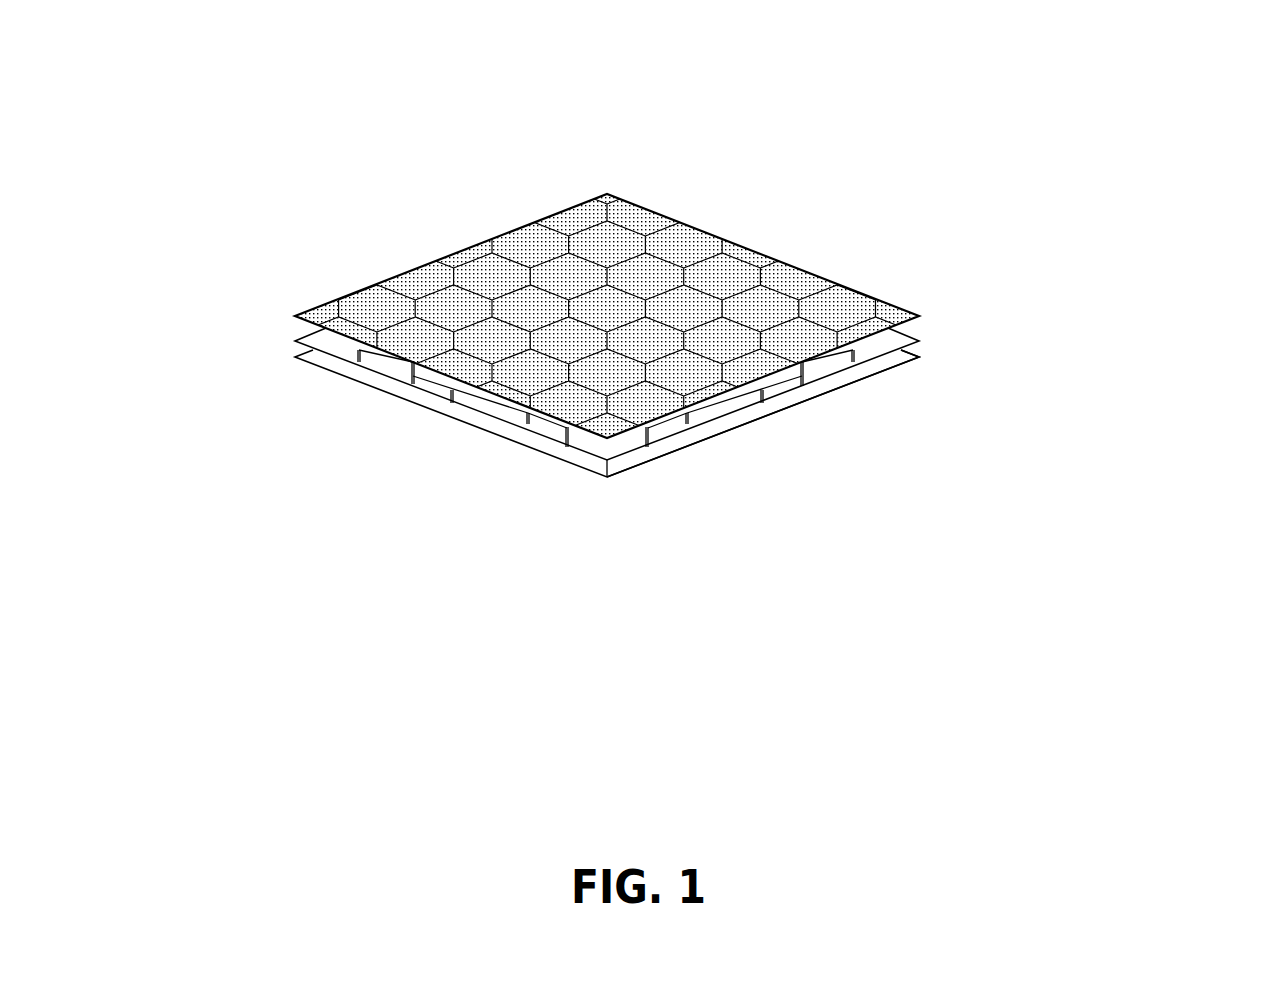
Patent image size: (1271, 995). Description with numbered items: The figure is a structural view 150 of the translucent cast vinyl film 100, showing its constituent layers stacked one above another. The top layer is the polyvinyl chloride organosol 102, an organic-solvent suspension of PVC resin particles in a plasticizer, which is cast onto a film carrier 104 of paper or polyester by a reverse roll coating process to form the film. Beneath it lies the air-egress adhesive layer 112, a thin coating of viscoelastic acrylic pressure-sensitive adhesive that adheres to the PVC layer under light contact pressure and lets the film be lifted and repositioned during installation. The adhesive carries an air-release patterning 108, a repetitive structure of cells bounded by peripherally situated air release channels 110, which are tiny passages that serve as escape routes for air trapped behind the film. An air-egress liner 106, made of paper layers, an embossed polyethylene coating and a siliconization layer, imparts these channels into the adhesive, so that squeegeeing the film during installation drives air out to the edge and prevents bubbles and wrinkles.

The translucent cast vinyl film 100 is at (348, 149).
The polyvinyl chloride organosol 102 is at (896, 306).
The film carrier 104 is at (717, 439).
The air-egress liner 106 is at (626, 461).
The air-release patterning 108 is at (445, 382).
The air release channel 110 is at (854, 351).
The air-egress adhesive layer 112 is at (316, 343).
The structural view 150 is at (1010, 680).